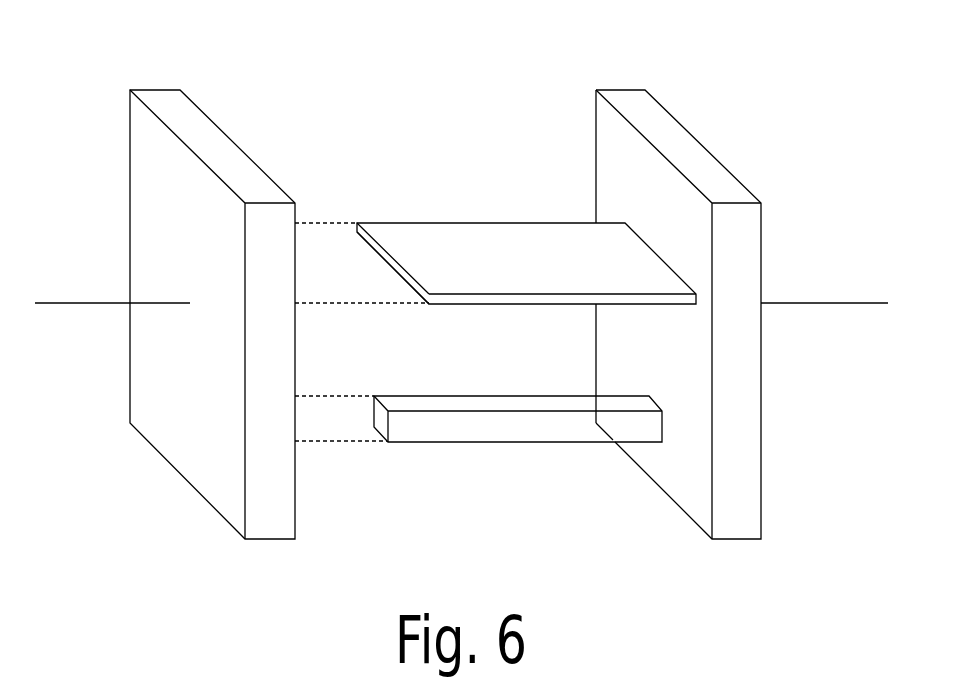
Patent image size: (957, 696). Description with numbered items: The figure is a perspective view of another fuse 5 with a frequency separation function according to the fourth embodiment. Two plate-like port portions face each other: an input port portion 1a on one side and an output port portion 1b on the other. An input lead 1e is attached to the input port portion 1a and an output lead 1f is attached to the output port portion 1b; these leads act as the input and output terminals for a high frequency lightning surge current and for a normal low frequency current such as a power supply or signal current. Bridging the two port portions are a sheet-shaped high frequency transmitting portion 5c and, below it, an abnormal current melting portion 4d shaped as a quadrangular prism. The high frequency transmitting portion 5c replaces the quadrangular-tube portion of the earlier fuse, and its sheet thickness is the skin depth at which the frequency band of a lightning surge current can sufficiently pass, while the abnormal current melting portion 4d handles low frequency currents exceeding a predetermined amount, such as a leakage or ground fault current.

The fuse with a frequency separation function 5 is at (492, 87).
The input port portion 1a is at (155, 89).
The output port portion 1b is at (623, 89).
The high frequency transmitting portion 5c is at (495, 222).
The abnormal current melting portion 4d is at (540, 443).
The input lead 1e is at (81, 303).
The output lead 1f is at (843, 303).